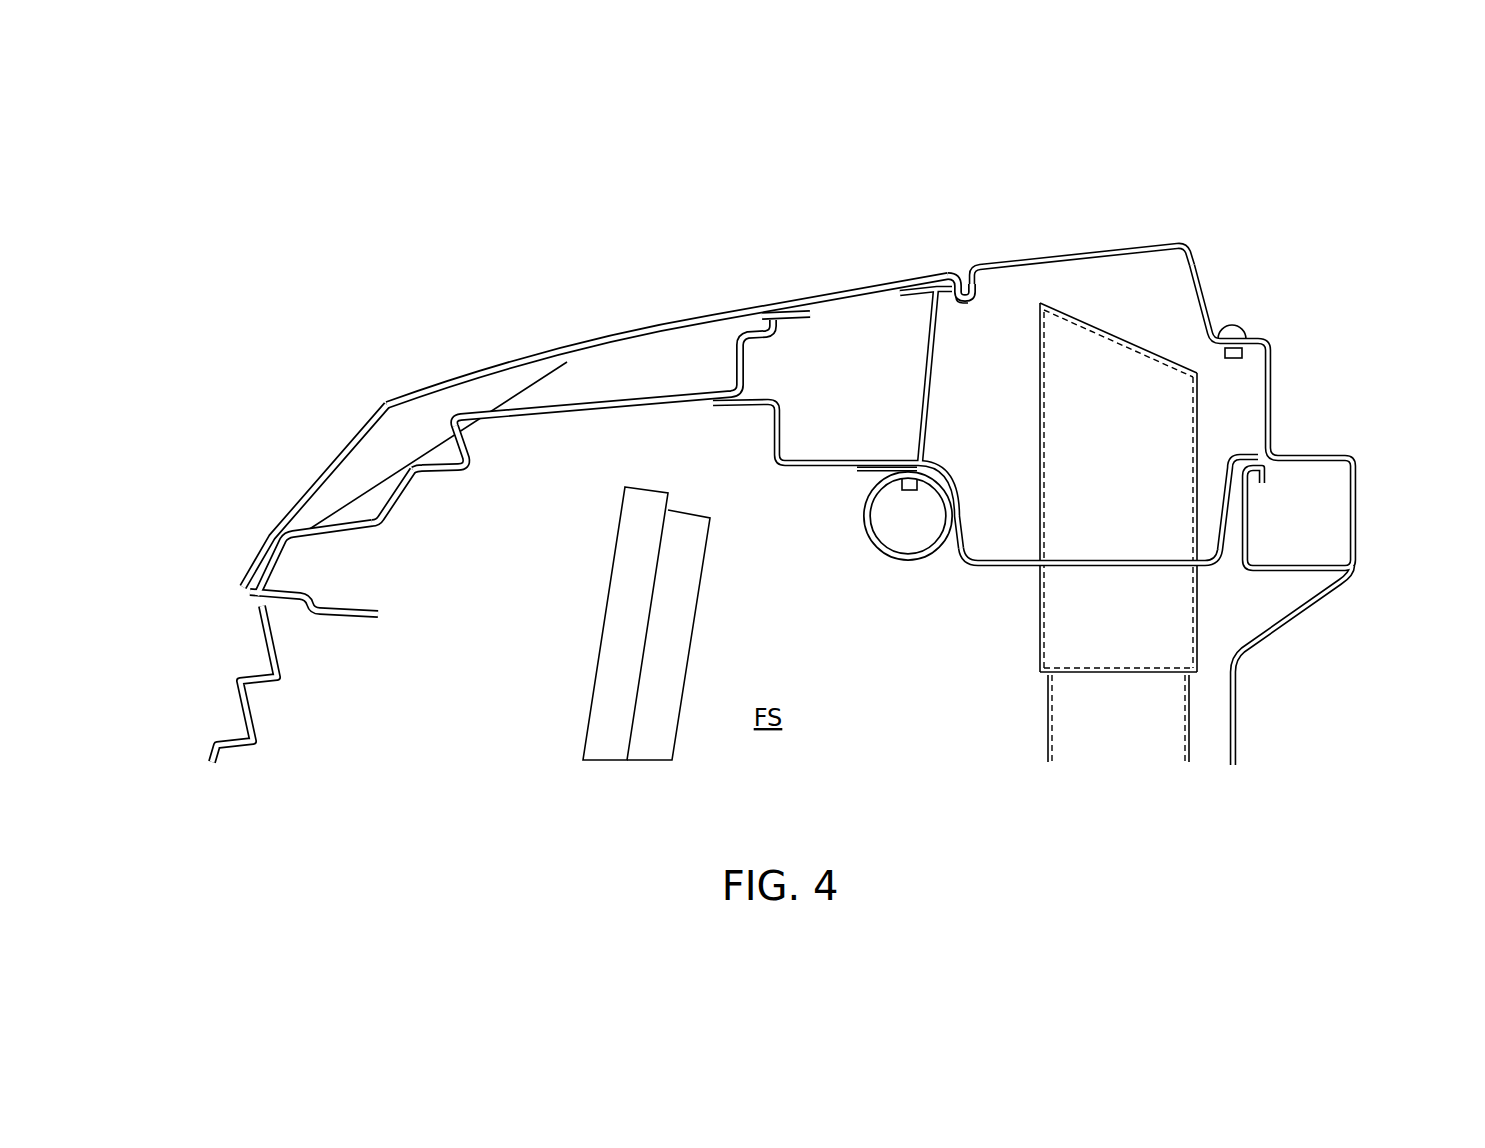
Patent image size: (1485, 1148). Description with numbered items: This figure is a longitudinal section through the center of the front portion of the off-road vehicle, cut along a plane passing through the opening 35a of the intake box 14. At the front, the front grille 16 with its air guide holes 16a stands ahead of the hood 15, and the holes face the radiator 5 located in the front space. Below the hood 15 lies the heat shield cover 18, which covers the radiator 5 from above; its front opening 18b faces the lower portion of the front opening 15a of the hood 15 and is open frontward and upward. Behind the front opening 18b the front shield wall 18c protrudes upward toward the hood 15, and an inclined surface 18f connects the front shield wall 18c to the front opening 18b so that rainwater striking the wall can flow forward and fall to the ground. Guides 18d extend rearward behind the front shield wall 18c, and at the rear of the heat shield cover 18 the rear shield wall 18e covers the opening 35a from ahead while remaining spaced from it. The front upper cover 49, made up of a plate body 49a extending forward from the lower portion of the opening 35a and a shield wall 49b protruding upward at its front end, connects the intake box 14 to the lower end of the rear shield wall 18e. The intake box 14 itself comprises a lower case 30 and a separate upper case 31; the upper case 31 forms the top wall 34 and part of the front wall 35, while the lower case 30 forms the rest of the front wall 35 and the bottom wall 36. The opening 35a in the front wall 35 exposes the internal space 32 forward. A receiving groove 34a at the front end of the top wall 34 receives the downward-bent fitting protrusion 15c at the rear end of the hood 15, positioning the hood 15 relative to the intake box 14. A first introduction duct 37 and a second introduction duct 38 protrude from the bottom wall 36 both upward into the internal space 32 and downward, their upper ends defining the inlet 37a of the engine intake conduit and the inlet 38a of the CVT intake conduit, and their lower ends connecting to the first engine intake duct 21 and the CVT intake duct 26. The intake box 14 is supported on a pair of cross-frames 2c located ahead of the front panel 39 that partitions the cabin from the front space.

The intake box 14 is at (1176, 238).
The hood 15 is at (476, 378).
The front opening 15a is at (323, 472).
The fitting protrusion 15c is at (966, 292).
The front grille 16 is at (225, 745).
The air guide holes 16a is at (262, 640).
The heat shield cover 18 is at (630, 394).
The front opening 18b is at (400, 513).
The front shield wall 18c is at (443, 445).
The guides 18d is at (537, 380).
The rear shield wall 18e is at (735, 357).
The inclined surface 18f is at (440, 458).
The first engine intake duct 21 is at (1048, 718).
The CVT intake duct 26 is at (1048, 740).
The cross-frames 2c is at (905, 560).
The lower case 30 is at (958, 570).
The upper case 31 is at (1208, 310).
The internal space 32 is at (1179, 411).
The top wall 34 is at (1036, 260).
The receiving groove 34a is at (960, 300).
The front wall 35 is at (903, 288).
The opening 35a is at (921, 410).
The bottom wall 36 is at (1013, 570).
The first introduction duct 37 is at (1200, 407).
The inlet 37a is at (1113, 333).
The second introduction duct 38 is at (1197, 433).
The inlet 38a is at (1153, 343).
The front panel 39 is at (1357, 583).
The front upper cover 49 is at (803, 470).
The plate body 49a is at (833, 470).
The shield wall 49b is at (777, 427).
The radiator 5 is at (596, 680).